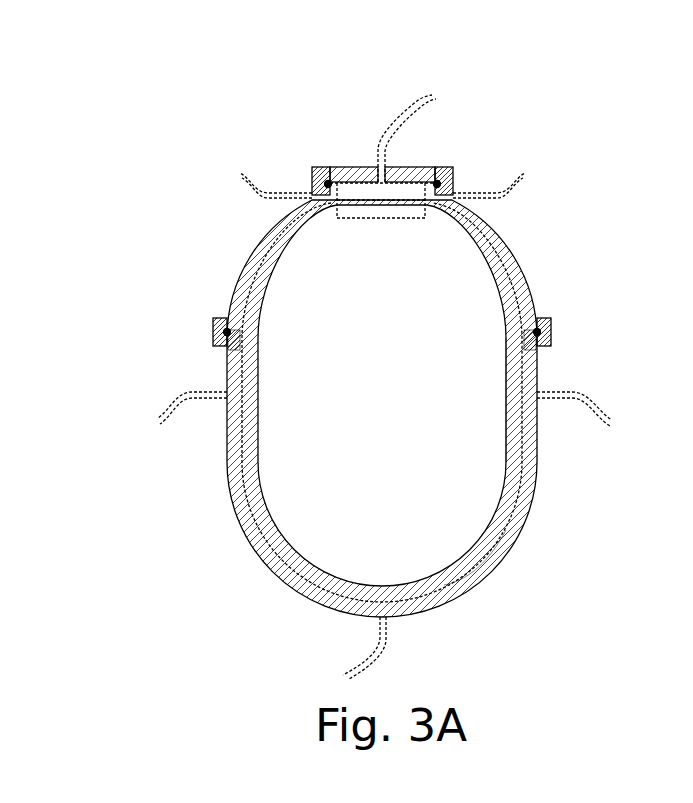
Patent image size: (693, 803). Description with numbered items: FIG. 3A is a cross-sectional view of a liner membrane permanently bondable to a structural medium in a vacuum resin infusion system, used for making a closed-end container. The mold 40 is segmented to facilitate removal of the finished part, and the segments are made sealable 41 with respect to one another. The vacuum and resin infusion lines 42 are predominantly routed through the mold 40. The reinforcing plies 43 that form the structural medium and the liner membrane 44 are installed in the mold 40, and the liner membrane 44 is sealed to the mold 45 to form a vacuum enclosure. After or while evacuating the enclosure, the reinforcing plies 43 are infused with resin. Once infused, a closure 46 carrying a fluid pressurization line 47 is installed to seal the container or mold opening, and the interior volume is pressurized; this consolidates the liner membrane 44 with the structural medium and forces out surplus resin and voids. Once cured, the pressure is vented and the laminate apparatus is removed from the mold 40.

The mold 40 is at (256, 246).
The seal between mold segments 41 is at (552, 332).
The vacuum and resin infusion lines 42 is at (240, 173).
The reinforcing plies 43 is at (505, 415).
The liner membrane 44 is at (495, 532).
The seal of liner membrane to mold 45 is at (318, 167).
The closure 46 is at (358, 167).
The fluid pressurization line 47 is at (432, 95).